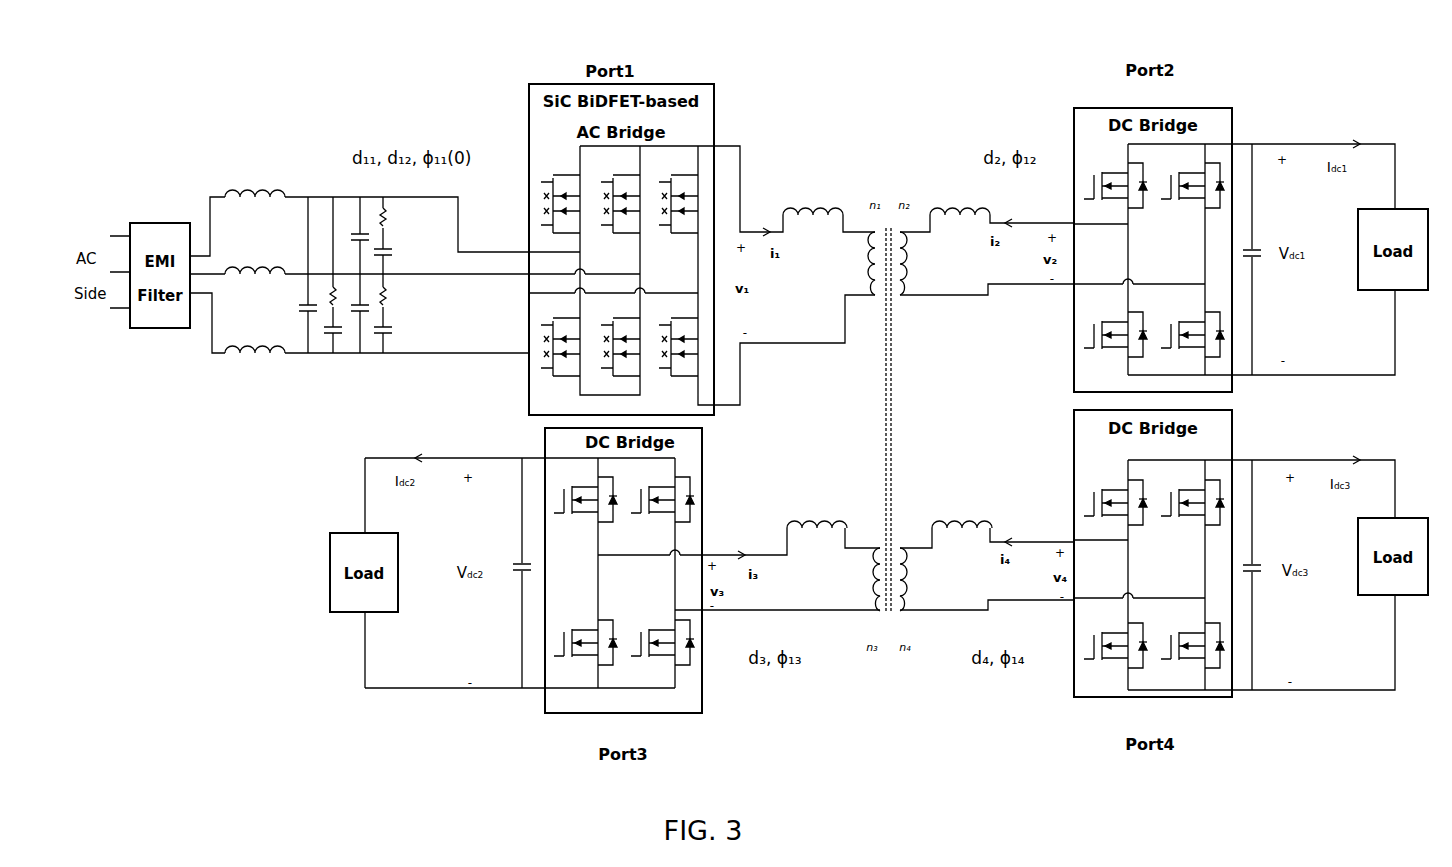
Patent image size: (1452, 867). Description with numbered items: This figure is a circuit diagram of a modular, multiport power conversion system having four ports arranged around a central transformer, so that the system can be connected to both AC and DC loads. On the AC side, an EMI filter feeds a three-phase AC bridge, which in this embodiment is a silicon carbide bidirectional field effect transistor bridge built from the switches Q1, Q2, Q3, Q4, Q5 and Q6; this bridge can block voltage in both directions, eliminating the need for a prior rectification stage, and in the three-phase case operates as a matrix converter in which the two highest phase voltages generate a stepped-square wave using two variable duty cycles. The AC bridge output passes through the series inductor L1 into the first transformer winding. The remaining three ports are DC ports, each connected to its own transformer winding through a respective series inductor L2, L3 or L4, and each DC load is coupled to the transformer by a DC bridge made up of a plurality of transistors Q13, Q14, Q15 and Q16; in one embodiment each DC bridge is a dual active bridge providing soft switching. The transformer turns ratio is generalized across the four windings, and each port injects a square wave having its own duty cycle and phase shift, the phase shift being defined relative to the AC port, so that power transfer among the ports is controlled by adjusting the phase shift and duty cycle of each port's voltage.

The SiC BiDFET switch Q1 is at (560, 191).
The SiC BiDFET switch Q2 is at (620, 191).
The SiC BiDFET switch Q3 is at (678, 191).
The SiC BiDFET switch Q4 is at (560, 334).
The SiC BiDFET switch Q5 is at (620, 334).
The SiC BiDFET switch Q6 is at (678, 334).
The transistor Q13 is at (850, 336).
The transistor Q14 is at (927, 336).
The transistor Q15 is at (850, 480).
The DC bridge MOSFET Q16 is at (927, 480).
The series inductor L1 is at (813, 203).
The series inductor L2 is at (960, 202).
The series inductor L3 is at (817, 517).
The series inductor L4 is at (962, 517).